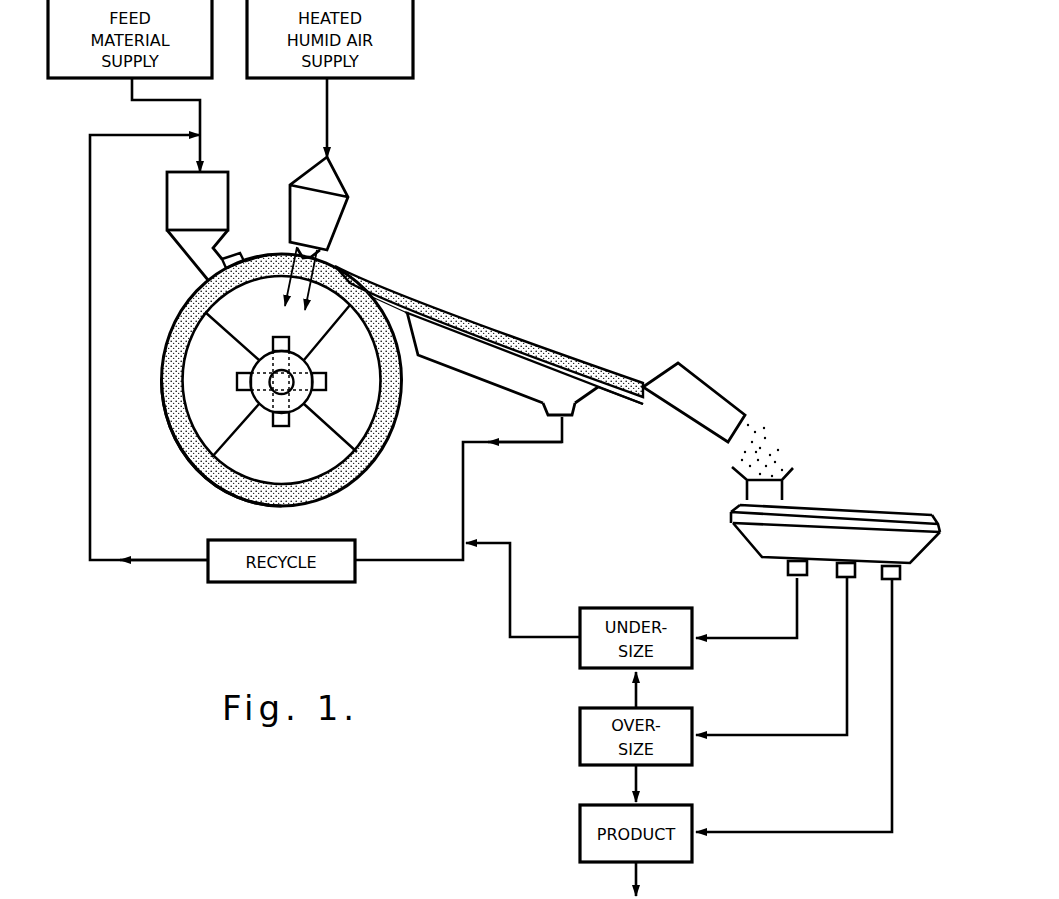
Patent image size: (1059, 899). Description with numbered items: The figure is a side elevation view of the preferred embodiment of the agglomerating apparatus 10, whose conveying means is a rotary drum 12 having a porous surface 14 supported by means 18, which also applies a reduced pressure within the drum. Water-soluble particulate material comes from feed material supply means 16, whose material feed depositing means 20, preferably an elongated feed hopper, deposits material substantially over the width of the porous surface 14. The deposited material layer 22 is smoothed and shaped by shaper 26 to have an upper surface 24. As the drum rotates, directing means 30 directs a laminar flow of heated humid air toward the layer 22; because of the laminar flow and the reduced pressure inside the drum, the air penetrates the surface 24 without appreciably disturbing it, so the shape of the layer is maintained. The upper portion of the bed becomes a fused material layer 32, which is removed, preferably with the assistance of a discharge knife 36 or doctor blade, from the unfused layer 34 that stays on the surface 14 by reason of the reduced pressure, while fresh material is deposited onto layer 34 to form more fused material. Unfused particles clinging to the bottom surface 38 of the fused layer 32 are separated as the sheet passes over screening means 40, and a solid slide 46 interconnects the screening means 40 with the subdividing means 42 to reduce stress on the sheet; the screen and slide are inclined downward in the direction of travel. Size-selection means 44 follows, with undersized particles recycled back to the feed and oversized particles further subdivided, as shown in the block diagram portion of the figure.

The combination of apparatus 10 is at (496, 235).
The rotary drum 12 is at (188, 471).
The porous surface 14 is at (183, 411).
The feed material supply means 16 is at (163, 203).
The means for supporting drum surface and applying reduced pressure 18 is at (299, 426).
The material feed depositing means 20 is at (186, 249).
The material layer 22 is at (276, 257).
The upper surface 24 is at (251, 257).
The shaper 26 is at (231, 253).
The directing means 30 is at (349, 203).
The fused material layer 32 is at (393, 287).
The unfused layer 34 is at (360, 471).
The discharge knife 36 is at (393, 312).
The bottom surface 38 is at (483, 342).
The screening means 40 is at (497, 377).
The subdividing means 42 is at (687, 430).
The size-selection means 44 is at (763, 542).
The solid slide 46 is at (620, 397).